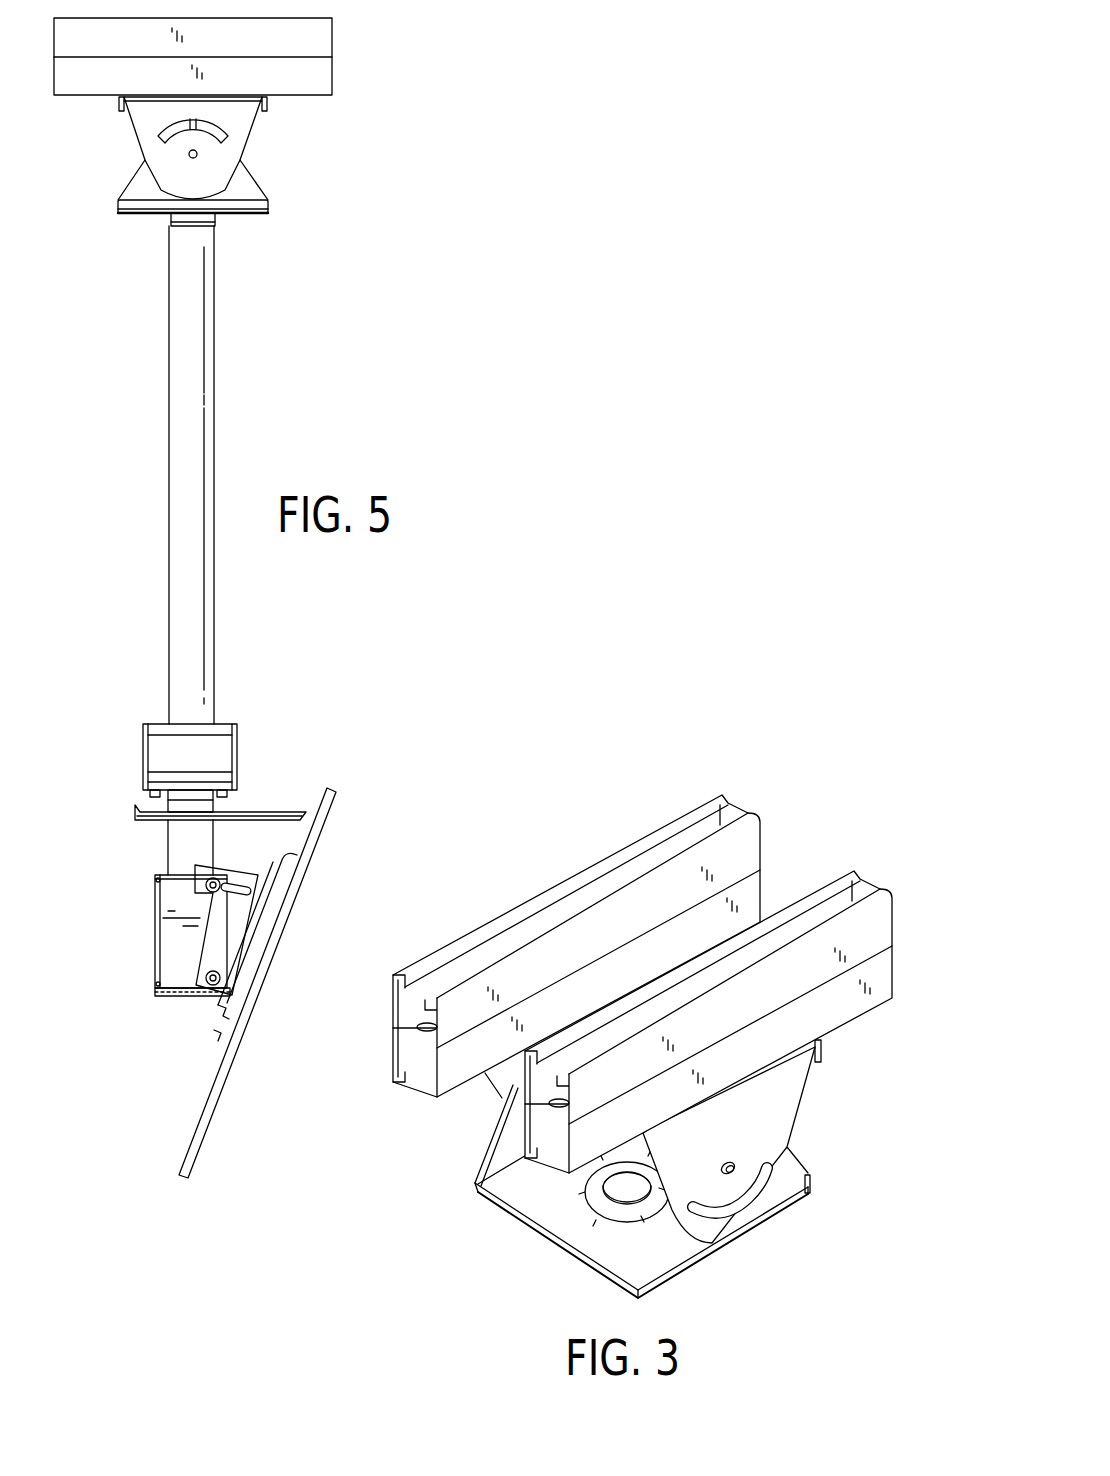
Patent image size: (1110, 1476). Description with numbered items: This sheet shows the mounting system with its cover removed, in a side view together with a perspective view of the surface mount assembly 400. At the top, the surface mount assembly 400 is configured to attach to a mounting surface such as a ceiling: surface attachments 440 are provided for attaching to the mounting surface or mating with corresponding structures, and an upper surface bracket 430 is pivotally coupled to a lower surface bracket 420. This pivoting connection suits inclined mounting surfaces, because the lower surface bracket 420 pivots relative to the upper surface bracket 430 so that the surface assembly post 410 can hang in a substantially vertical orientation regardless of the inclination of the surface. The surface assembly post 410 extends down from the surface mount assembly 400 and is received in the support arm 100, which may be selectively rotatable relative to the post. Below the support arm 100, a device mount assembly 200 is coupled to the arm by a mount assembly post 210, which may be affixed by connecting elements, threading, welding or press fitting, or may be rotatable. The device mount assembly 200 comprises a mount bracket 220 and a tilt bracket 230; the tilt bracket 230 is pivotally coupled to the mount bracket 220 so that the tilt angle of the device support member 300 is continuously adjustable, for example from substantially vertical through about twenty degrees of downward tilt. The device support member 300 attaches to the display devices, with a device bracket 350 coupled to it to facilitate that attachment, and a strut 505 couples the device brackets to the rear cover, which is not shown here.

In FIG. 5, the support arm 100 is at (165, 752).
In FIG. 5, the device mount assembly 200 is at (160, 990).
In FIG. 5, the mount assembly post 210 is at (177, 850).
In FIG. 5, the mount bracket 220 is at (170, 938).
In FIG. 5, the tilt bracket 230 is at (203, 962).
In FIG. 5, the device support member 300 is at (263, 928).
In FIG. 5, the device bracket 350 is at (207, 1118).
In FIG. 5, the surface mount assembly 400 is at (376, 108).
In FIG. 3, the surface mount assembly 400 is at (579, 833).
In FIG. 5, the surface assembly post 410 is at (187, 487).
In FIG. 5, the lower surface bracket 420 is at (140, 202).
In FIG. 3, the lower surface bracket 420 is at (788, 1197).
In FIG. 5, the upper surface bracket 430 is at (240, 135).
In FIG. 3, the upper surface bracket 430 is at (790, 1103).
In FIG. 5, the surface attachments 440 is at (78, 75).
In FIG. 3, the surface attachments 440 is at (852, 940).
In FIG. 5, the strut 505 is at (278, 812).